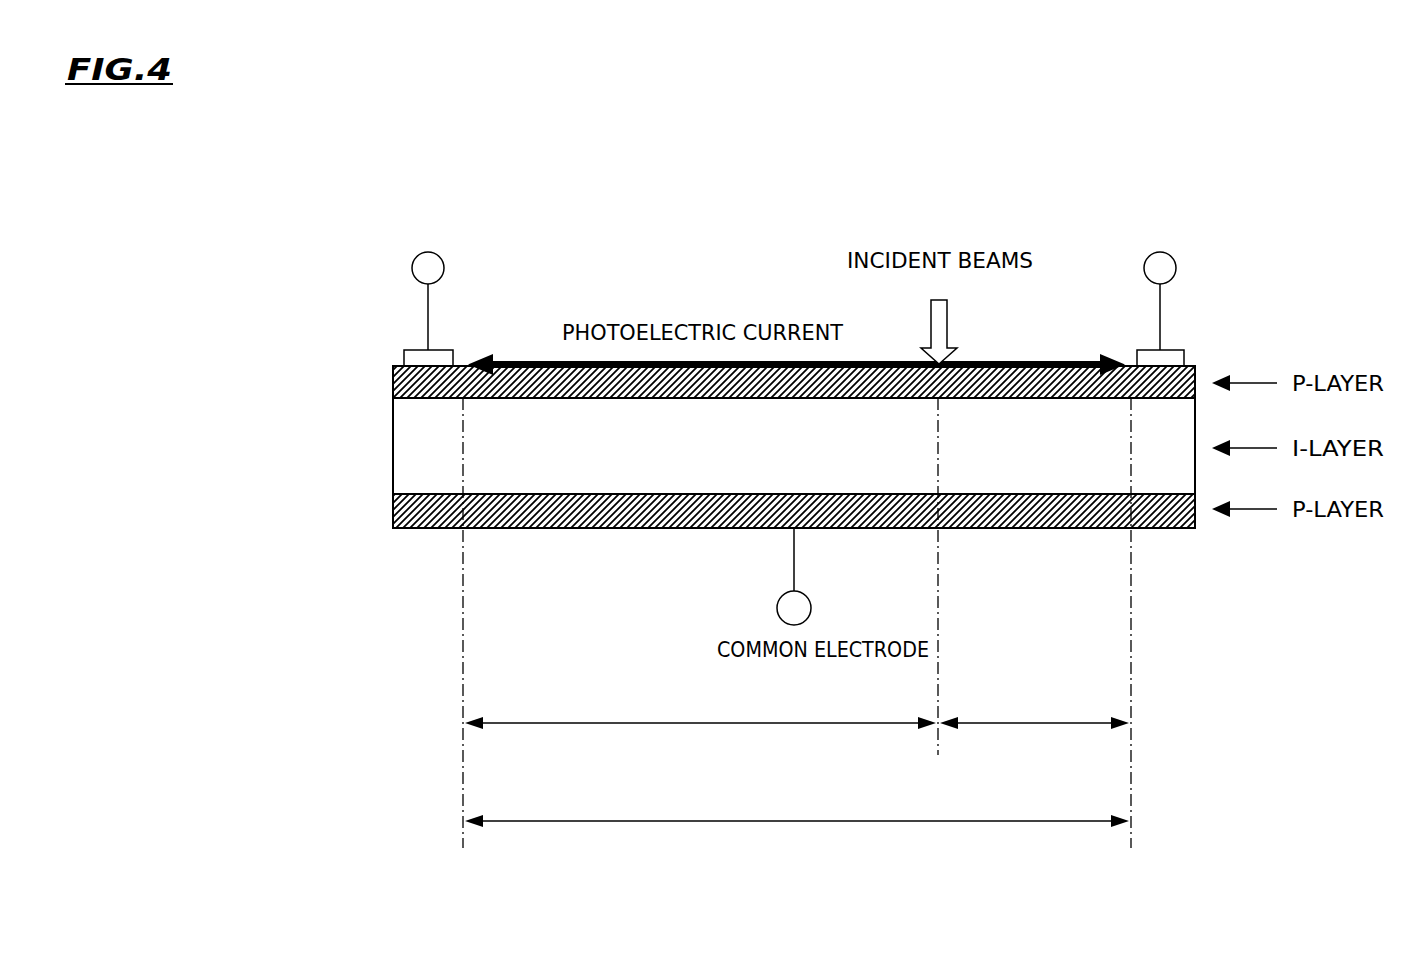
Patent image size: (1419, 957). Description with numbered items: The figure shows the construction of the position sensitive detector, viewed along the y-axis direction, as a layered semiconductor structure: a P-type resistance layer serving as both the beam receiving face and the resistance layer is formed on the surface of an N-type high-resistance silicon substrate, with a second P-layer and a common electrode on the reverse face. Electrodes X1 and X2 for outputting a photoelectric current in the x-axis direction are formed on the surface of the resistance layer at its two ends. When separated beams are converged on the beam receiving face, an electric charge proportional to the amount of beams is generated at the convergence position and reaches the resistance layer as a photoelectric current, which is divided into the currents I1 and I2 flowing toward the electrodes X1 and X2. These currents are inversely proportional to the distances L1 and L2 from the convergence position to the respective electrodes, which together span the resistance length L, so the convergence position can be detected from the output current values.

The electrode X1 is at (405, 348).
The electrode X2 is at (1183, 348).
The photoelectric current I1 is at (428, 281).
The photoelectric current I2 is at (1160, 281).
The distance L1 is at (700, 708).
The distance L2 is at (1034, 707).
The resistance length L is at (797, 805).